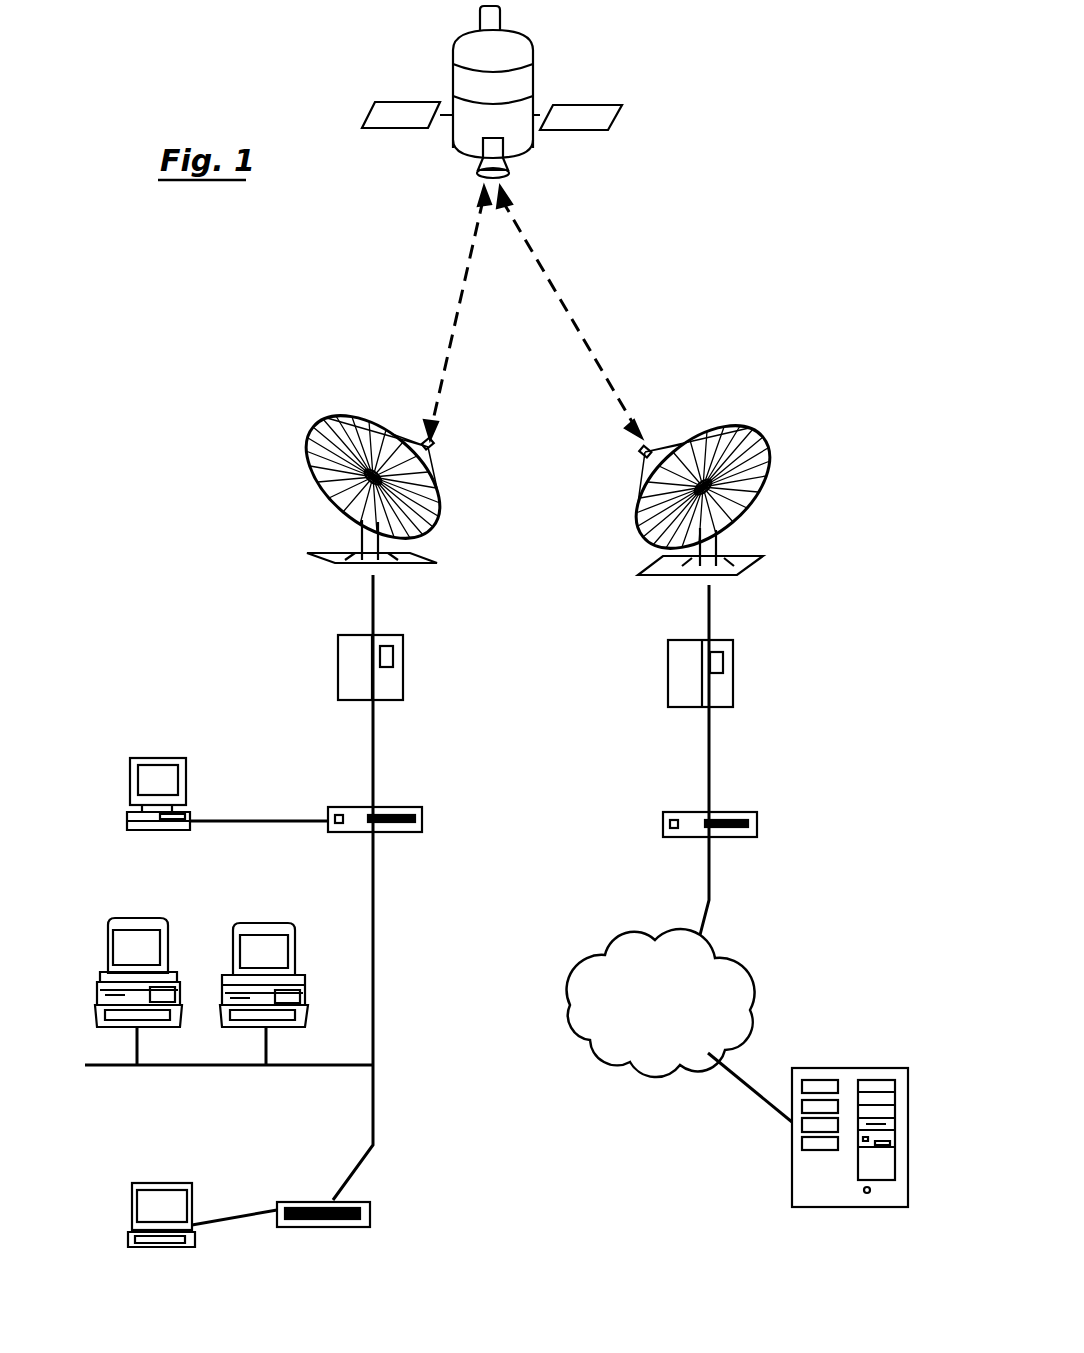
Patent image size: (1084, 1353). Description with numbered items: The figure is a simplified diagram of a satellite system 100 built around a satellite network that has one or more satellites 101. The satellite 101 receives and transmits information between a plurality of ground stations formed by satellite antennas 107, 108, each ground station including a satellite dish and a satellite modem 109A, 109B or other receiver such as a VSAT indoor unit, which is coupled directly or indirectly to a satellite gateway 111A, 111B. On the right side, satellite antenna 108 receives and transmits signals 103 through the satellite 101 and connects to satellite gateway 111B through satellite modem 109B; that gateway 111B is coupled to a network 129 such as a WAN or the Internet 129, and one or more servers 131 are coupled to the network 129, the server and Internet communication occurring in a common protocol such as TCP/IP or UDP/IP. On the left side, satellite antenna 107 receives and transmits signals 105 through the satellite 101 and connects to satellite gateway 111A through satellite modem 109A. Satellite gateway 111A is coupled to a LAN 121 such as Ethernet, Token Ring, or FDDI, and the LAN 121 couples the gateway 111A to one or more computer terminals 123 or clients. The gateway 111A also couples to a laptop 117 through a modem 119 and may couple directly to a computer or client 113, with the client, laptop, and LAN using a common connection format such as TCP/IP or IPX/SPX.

The satellite system 100 is at (766, 156).
The satellite 101 is at (525, 77).
The signals 103 is at (590, 343).
The signals 105 is at (448, 348).
The satellite antenna 107 is at (327, 466).
The satellite antenna 108 is at (755, 490).
The satellite modem 109A is at (343, 672).
The satellite modem 109B is at (725, 678).
The satellite gateway 111A is at (425, 820).
The satellite gateway 111B is at (757, 833).
The computer 113 is at (157, 760).
The laptop 117 is at (128, 1222).
The modem 119 is at (330, 1228).
The LAN 121 is at (227, 1070).
The computer terminals 123 is at (140, 920).
The network 129 is at (672, 1062).
The servers 131 is at (855, 1208).